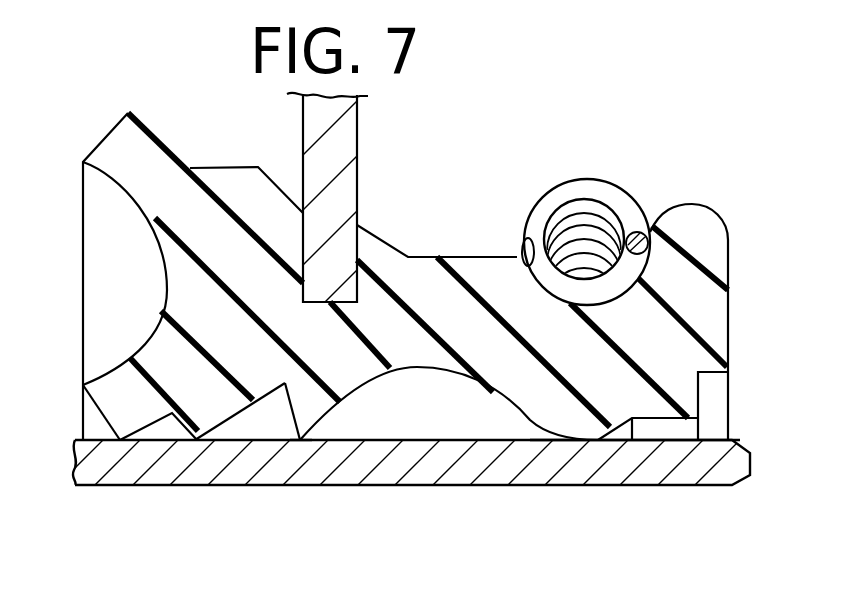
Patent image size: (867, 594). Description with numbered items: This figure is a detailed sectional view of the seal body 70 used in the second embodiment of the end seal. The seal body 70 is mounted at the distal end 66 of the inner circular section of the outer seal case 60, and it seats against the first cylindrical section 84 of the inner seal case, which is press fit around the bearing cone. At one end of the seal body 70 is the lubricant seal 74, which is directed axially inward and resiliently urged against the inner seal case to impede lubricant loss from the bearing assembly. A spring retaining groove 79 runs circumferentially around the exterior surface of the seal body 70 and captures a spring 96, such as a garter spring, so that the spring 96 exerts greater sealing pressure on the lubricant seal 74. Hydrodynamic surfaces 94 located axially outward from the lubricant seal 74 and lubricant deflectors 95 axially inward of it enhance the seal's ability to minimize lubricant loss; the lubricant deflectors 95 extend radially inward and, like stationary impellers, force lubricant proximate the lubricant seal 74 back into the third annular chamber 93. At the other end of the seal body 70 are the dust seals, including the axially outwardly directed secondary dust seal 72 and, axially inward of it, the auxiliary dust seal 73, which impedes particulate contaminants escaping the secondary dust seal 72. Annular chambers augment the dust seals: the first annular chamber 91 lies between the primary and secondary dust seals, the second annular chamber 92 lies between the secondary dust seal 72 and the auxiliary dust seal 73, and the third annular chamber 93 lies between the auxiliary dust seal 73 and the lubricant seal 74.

The outer seal case 60 is at (357, 133).
The distal end 66 is at (340, 303).
The seal body 70 is at (465, 250).
The secondary dust seal 72 is at (196, 442).
The auxiliary dust seal 73 is at (300, 442).
The lubricant seal 74 is at (594, 442).
The spring retaining groove 79 is at (524, 248).
The first cylindrical section 84 is at (103, 484).
The first annular chamber 91 is at (172, 432).
The second annular chamber 92 is at (263, 418).
The third annular chamber 93 is at (398, 394).
The hydrodynamic surfaces 94 is at (712, 383).
The lubricant deflectors 95 is at (568, 432).
The spring 96 is at (607, 183).